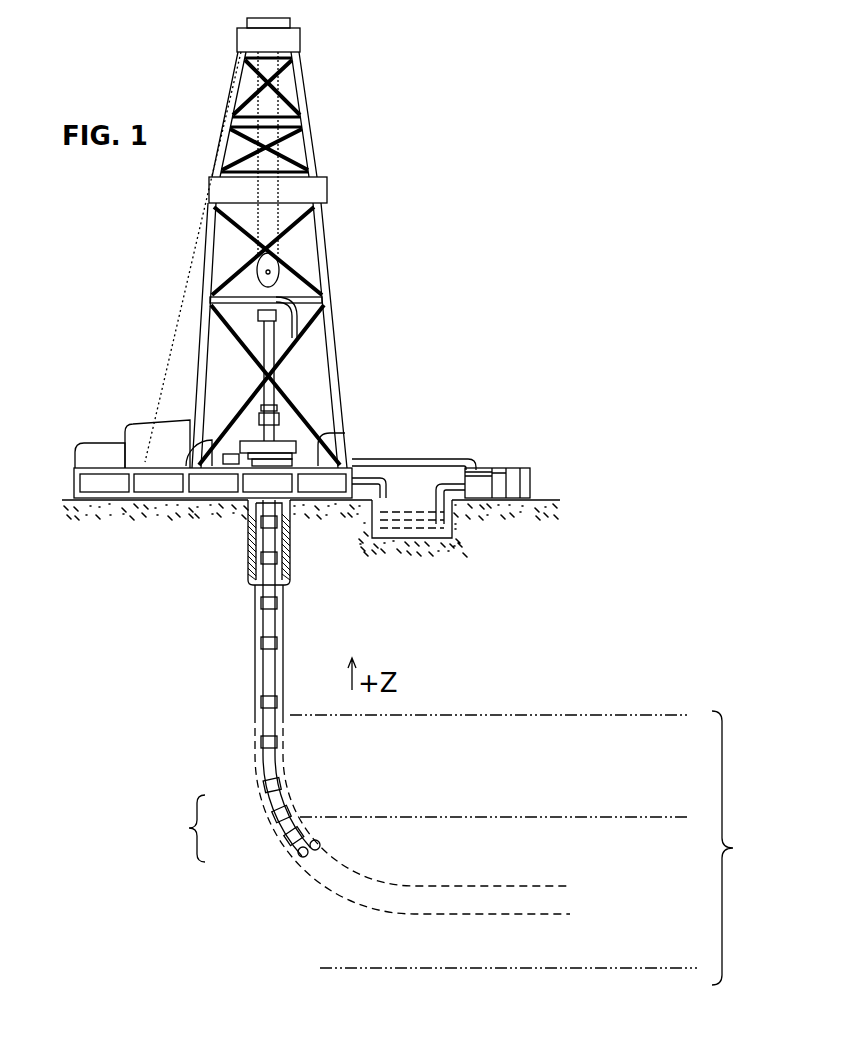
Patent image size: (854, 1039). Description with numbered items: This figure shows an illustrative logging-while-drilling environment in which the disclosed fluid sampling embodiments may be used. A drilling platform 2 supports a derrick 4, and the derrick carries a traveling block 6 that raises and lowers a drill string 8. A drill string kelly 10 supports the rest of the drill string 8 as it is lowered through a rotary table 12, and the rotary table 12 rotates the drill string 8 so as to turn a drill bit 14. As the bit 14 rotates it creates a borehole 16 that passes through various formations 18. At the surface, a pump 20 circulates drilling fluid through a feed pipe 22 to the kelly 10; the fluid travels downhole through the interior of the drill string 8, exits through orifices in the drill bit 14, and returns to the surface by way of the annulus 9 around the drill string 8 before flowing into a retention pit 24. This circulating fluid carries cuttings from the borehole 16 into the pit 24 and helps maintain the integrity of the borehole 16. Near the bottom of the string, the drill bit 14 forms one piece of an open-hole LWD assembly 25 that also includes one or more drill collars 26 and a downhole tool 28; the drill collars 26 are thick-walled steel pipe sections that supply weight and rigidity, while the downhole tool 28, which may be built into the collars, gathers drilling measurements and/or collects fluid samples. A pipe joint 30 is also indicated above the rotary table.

The drilling platform 2 is at (70, 478).
The derrick 4 is at (310, 147).
The traveling block 6 is at (278, 270).
The drill string 8 is at (277, 630).
The annulus 9 is at (258, 633).
The drill string kelly 10 is at (268, 336).
The rotary table 12 is at (287, 443).
The drill bit 14 is at (312, 845).
The borehole 16 is at (283, 635).
The formations 18 is at (529, 848).
The pump 20 is at (480, 470).
The feed pipe 22 is at (423, 457).
The retention pit 24 is at (393, 525).
The bottom hole assembly 25 is at (176, 828).
The drill collars 26 is at (293, 832).
The downhole tool 28 is at (270, 807).
The drill pipe joint 30 is at (274, 400).